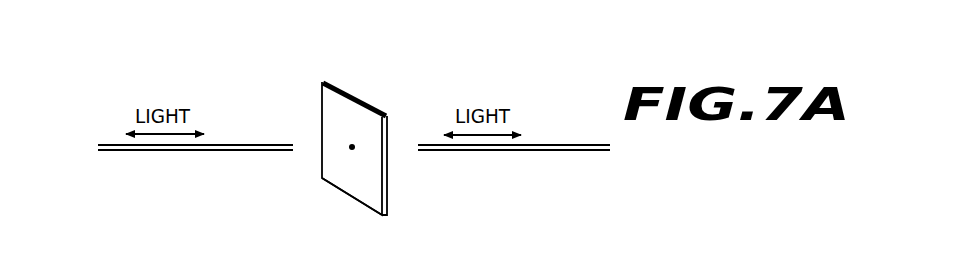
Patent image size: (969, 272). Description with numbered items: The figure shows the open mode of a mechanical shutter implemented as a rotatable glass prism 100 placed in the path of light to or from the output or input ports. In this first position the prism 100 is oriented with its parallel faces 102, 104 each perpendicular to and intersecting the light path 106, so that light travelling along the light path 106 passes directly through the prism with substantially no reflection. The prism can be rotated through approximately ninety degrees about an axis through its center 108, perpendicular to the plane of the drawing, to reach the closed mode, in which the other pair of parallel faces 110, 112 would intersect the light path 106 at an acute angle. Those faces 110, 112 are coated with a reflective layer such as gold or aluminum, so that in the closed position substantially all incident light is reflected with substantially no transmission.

The rotatable glass prism 100 is at (393, 122).
The parallel face 102 is at (322, 108).
The parallel face 104 is at (386, 177).
The light path 106 is at (183, 152).
The center 108 is at (349, 149).
The parallel face 110 is at (331, 84).
The parallel face 112 is at (350, 196).